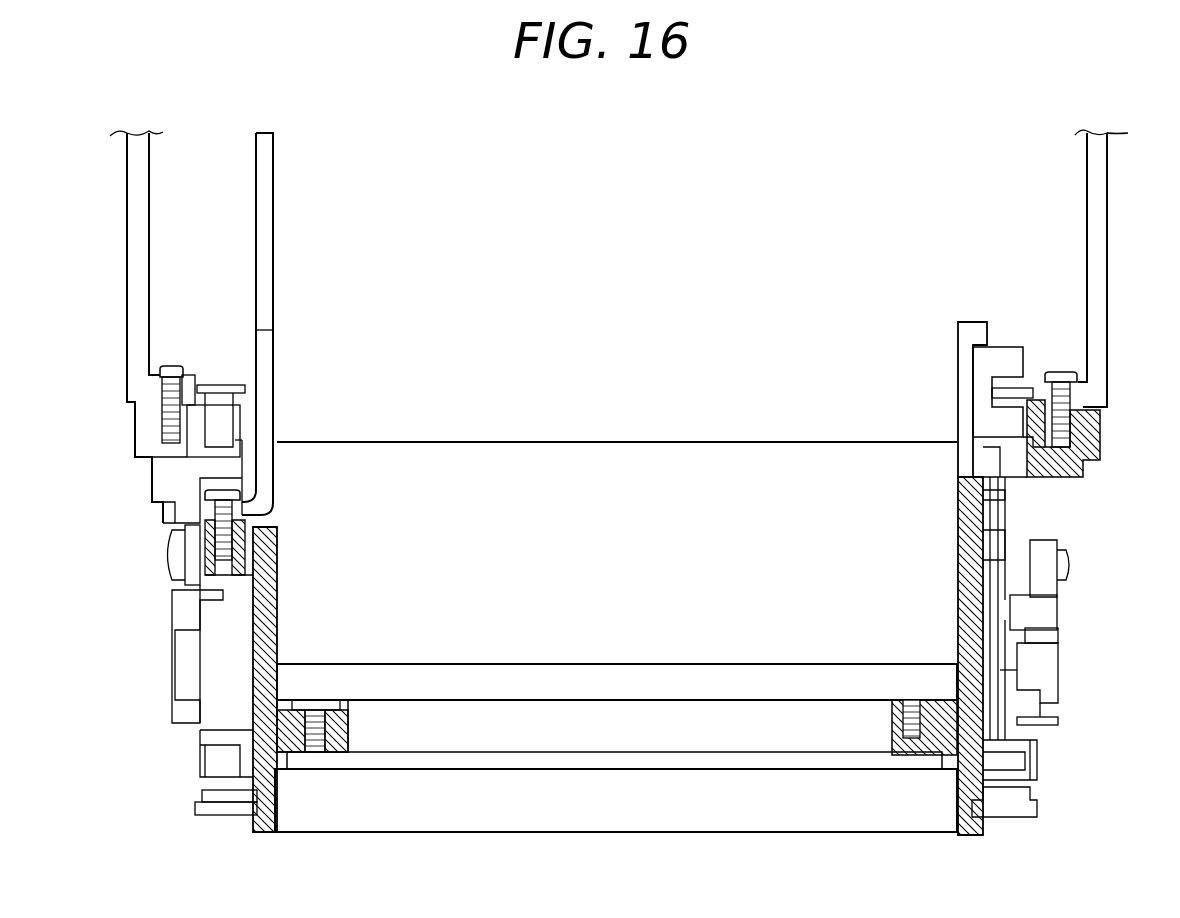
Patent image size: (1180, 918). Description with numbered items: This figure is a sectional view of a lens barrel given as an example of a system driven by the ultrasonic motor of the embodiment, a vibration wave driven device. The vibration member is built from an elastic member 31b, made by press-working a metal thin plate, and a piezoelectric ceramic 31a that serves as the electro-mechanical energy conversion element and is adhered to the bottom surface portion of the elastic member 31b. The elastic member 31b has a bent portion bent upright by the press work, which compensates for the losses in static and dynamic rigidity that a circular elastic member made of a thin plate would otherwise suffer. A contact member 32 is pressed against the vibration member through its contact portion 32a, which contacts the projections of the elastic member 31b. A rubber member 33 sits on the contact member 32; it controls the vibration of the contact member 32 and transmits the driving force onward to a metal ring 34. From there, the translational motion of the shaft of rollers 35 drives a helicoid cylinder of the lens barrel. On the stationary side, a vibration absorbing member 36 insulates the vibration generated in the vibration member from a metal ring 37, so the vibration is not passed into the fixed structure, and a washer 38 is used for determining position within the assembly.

The piezoelectric ceramic 31a is at (1037, 787).
The elastic member 31b is at (1030, 762).
The contact member 32 is at (1055, 672).
The contact portion 32a is at (1055, 728).
The rubber member 33 is at (1055, 637).
The metal ring 34 is at (1055, 610).
The rollers 35 is at (1048, 592).
The vibration absorbing member 36 is at (227, 782).
The metal ring 37 is at (205, 797).
The washer 38 is at (203, 818).